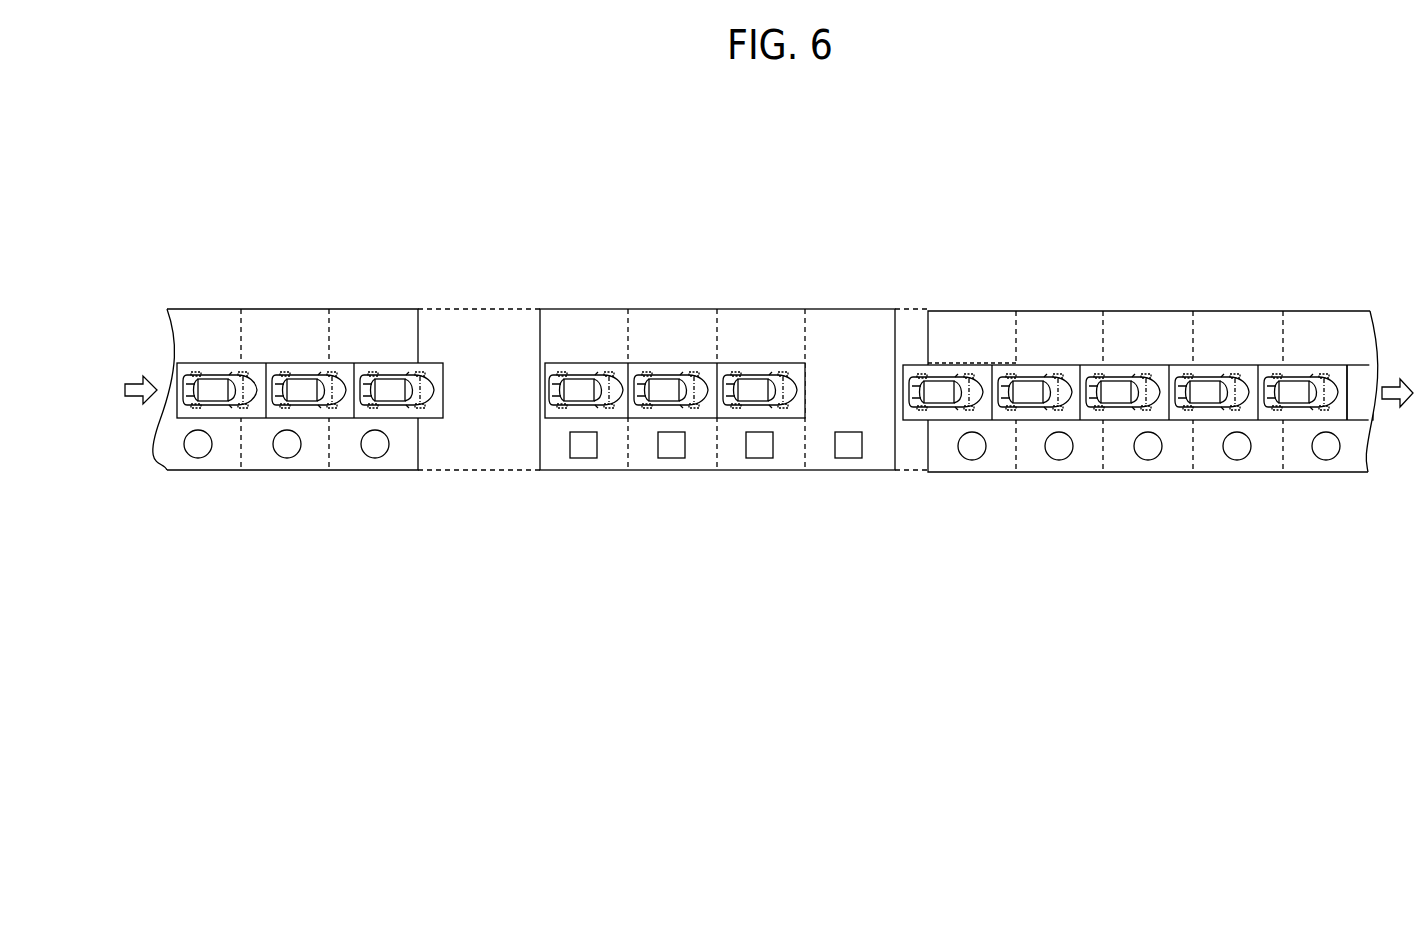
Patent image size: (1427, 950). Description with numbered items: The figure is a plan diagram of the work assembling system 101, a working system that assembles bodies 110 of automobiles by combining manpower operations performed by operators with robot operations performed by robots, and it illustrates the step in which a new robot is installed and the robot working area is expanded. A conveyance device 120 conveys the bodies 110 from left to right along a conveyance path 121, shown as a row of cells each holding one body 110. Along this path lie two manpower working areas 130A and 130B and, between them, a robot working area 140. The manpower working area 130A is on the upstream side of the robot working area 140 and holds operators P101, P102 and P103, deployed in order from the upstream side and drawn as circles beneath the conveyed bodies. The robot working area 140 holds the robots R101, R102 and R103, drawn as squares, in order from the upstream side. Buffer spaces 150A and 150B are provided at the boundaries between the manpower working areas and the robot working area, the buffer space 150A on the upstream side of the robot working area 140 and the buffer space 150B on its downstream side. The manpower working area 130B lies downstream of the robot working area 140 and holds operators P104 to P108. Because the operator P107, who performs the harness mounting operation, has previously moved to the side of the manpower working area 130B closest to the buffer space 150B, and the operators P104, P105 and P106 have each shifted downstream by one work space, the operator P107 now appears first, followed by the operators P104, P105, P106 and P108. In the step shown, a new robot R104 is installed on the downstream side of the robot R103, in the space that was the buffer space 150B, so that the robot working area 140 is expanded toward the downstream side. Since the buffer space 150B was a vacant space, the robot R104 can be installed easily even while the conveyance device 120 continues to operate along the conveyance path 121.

The work assembling system 101 is at (759, 192).
The body 110 is at (367, 404).
The conveyance device 120 is at (1358, 394).
The conveyance path 121 is at (1358, 408).
The manpower working area 130A is at (354, 309).
The manpower working area 130B is at (1318, 280).
The robot working area 140 is at (737, 309).
The buffer space 150A is at (495, 309).
The buffer space 150B is at (910, 309).
The operator P101 is at (206, 454).
The operator P102 is at (295, 454).
The operator P103 is at (383, 454).
The operator P104 is at (1067, 456).
The operator P105 is at (1156, 456).
The operator P106 is at (1245, 456).
The operator P107 is at (980, 456).
The operator P108 is at (1334, 456).
The robot R101 is at (588, 458).
The robot R102 is at (676, 458).
The robot R103 is at (764, 458).
The robot R104 is at (853, 458).